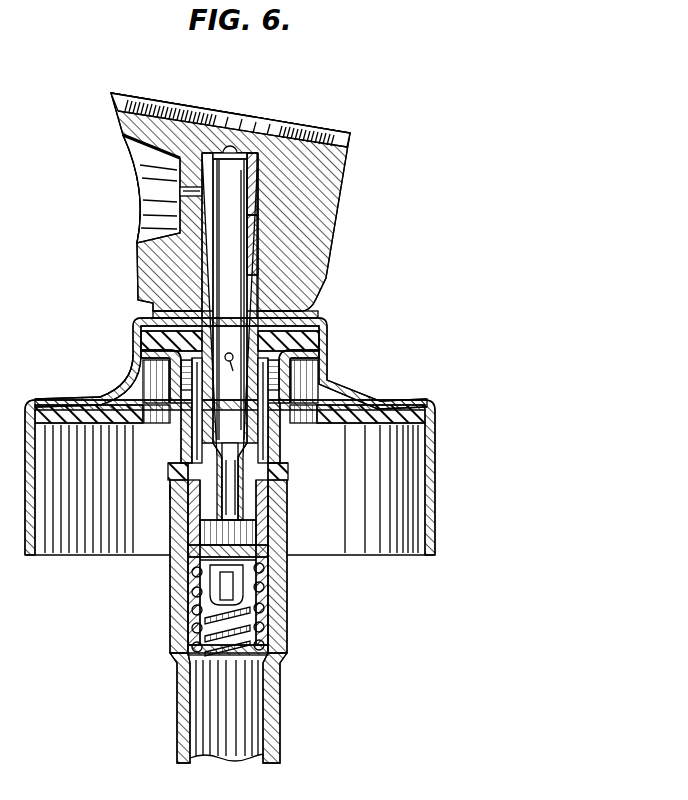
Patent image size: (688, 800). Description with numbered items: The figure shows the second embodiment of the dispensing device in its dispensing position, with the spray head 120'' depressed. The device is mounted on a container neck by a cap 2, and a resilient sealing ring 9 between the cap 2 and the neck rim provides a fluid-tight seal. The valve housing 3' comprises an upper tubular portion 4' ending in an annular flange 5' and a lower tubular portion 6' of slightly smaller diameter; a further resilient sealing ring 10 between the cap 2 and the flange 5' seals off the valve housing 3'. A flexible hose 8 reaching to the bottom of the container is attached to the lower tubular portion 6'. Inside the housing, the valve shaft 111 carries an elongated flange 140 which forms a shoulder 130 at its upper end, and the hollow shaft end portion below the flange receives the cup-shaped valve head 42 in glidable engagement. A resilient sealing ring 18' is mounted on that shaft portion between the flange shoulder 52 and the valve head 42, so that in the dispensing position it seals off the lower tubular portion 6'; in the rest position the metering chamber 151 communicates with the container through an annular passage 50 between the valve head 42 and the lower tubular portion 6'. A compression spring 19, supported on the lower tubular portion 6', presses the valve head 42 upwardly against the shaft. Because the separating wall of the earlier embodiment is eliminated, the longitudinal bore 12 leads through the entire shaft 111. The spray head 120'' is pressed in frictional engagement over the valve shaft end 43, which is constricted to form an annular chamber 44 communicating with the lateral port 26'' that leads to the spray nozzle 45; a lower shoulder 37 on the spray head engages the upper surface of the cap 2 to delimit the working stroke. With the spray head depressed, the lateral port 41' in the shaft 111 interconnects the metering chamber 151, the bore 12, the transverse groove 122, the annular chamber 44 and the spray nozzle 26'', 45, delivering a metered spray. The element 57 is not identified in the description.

The cap 2 is at (436, 495).
The valve housing 3' is at (206, 643).
The upper tubular portion 4' is at (224, 427).
The annular flange 5' is at (121, 357).
The lower tubular portion 6' is at (258, 582).
The flexible hose 8 is at (178, 719).
The resilient sealing ring 9 is at (436, 406).
The resilient sealing ring 10 is at (327, 326).
The bore 12 is at (212, 266).
The resilient sealing ring 18' is at (148, 493).
The compression spring 19 is at (285, 618).
The lateral port 26'' is at (145, 179).
The lower shoulder 37 is at (274, 303).
The lateral port 41' is at (230, 375).
The valve head 42 is at (285, 505).
The valve shaft end 43 is at (258, 158).
The annular chamber 44 is at (256, 192).
The spray nozzle 45 is at (148, 214).
The annular passage 50 is at (186, 545).
The flange shoulder 52 is at (285, 471).
The liner wall 57 is at (170, 517).
The valve shaft 111 is at (253, 238).
The spray head 120'' is at (201, 202).
The transverse groove 122 is at (224, 147).
The shoulder 130 is at (262, 397).
The elongated flange 140 is at (178, 457).
The metering chamber 151 is at (271, 441).